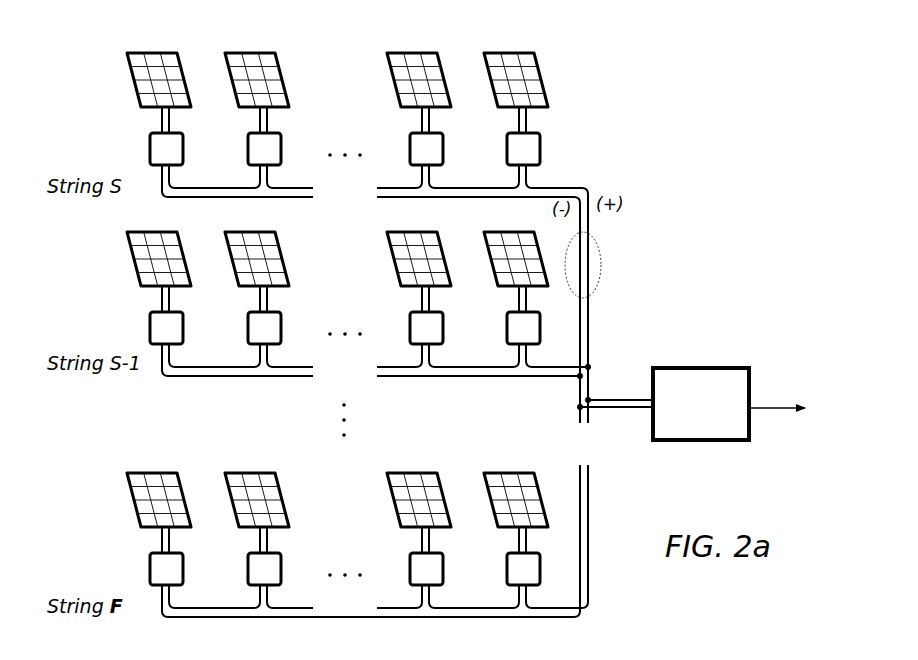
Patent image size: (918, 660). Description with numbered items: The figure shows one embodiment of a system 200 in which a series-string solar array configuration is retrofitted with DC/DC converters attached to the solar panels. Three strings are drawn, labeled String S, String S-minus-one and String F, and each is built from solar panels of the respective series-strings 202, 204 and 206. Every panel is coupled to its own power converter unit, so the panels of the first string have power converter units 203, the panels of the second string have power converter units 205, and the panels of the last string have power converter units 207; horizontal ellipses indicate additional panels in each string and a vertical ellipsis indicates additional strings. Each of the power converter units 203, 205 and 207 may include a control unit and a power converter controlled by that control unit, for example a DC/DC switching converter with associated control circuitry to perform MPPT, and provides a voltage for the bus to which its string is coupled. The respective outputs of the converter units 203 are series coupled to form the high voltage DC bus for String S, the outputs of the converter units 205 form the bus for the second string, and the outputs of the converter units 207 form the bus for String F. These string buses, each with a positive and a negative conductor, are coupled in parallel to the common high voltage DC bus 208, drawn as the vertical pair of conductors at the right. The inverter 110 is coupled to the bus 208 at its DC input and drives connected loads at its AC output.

The system 200 is at (602, 86).
The solar panel series-string 202 is at (126, 96).
The power converter unit 203 is at (136, 149).
The solar panel series-string 204 is at (126, 275).
The power converter unit 205 is at (136, 328).
The solar panel series-string 206 is at (126, 508).
The power converter unit 207 is at (136, 561).
The high voltage DC bus 208 is at (600, 262).
The inverter 110 is at (740, 437).